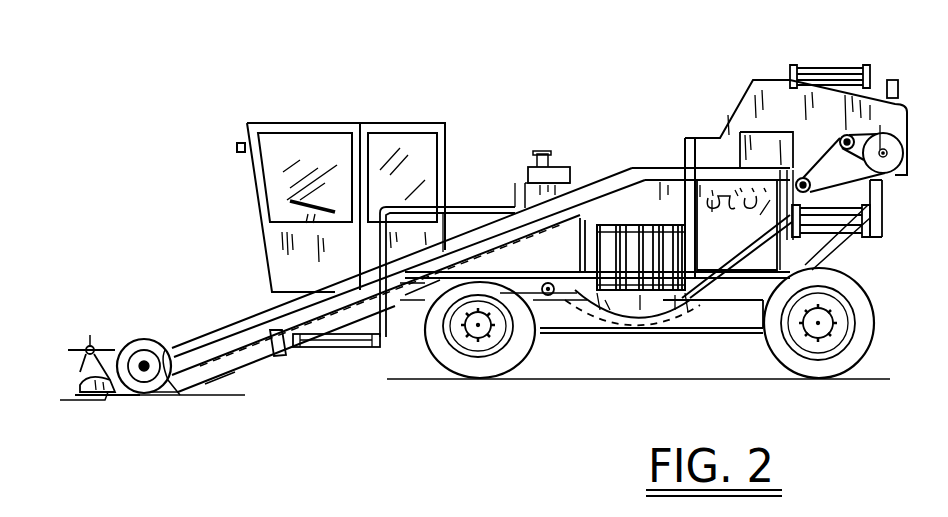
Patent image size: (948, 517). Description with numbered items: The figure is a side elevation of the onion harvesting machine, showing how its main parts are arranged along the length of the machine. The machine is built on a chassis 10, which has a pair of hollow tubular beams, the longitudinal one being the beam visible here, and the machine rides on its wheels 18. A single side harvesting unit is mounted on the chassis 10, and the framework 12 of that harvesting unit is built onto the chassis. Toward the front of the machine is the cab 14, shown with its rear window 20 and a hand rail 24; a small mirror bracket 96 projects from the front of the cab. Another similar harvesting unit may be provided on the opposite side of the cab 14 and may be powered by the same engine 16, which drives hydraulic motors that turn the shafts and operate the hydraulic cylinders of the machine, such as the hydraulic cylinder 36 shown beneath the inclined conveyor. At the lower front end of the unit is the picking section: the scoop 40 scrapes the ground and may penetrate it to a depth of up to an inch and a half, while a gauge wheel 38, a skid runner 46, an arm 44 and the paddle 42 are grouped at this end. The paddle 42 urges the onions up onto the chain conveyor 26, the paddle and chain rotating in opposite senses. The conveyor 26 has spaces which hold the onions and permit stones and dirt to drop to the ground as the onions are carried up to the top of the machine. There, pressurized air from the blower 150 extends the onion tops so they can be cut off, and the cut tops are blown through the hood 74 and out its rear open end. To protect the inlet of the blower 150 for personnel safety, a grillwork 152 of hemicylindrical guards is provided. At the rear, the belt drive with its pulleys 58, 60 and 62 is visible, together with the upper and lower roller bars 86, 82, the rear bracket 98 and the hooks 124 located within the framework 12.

The chassis 10 is at (690, 334).
The framework 12 is at (762, 250).
The cab 14 is at (318, 123).
The engine 16 is at (580, 177).
The ground wheels 18 is at (533, 344).
The cab rear window 20 is at (445, 152).
The hand rail 24 is at (467, 207).
The chain conveyor 26 is at (700, 307).
The hydraulic cylinder 36 is at (325, 347).
The conveyor gauge wheel 38 is at (167, 386).
The scoop 40 is at (100, 395).
The paddle 42 is at (93, 347).
The arm 44 is at (87, 353).
The skid runner 46 is at (82, 380).
The lower idler pulley 58 is at (882, 215).
The drive pulley 60 is at (888, 182).
The idler pulley 62 is at (845, 135).
The hood 74 is at (728, 102).
The lower roller bar 82 is at (835, 237).
The upper roller bar 86 is at (840, 68).
The mirror bracket 96 is at (237, 148).
The rear bracket 98 is at (890, 80).
The hooks 124 is at (738, 216).
The blower 150 is at (618, 303).
The grillwork 152 is at (660, 304).